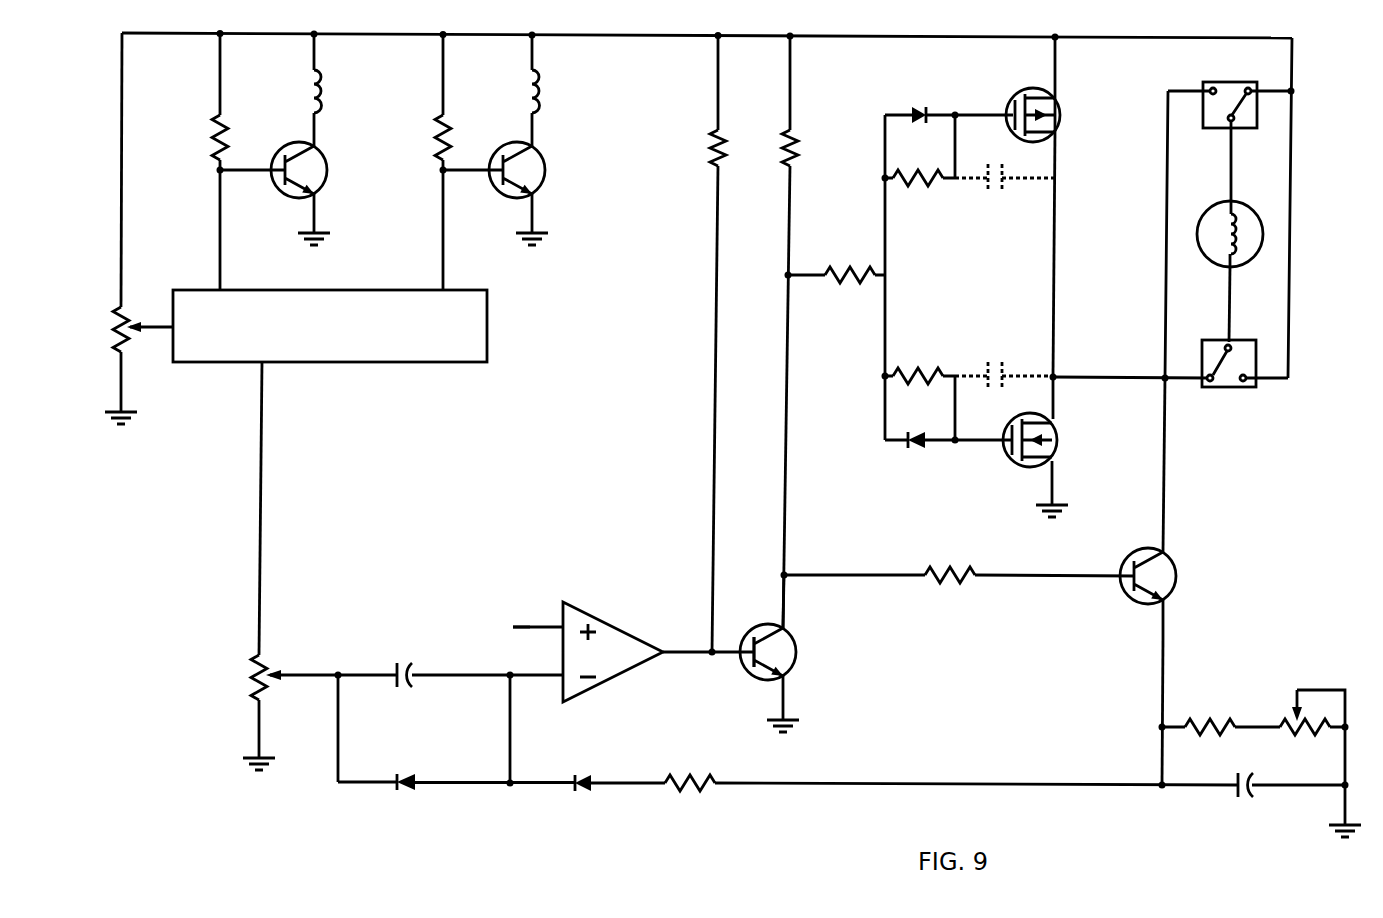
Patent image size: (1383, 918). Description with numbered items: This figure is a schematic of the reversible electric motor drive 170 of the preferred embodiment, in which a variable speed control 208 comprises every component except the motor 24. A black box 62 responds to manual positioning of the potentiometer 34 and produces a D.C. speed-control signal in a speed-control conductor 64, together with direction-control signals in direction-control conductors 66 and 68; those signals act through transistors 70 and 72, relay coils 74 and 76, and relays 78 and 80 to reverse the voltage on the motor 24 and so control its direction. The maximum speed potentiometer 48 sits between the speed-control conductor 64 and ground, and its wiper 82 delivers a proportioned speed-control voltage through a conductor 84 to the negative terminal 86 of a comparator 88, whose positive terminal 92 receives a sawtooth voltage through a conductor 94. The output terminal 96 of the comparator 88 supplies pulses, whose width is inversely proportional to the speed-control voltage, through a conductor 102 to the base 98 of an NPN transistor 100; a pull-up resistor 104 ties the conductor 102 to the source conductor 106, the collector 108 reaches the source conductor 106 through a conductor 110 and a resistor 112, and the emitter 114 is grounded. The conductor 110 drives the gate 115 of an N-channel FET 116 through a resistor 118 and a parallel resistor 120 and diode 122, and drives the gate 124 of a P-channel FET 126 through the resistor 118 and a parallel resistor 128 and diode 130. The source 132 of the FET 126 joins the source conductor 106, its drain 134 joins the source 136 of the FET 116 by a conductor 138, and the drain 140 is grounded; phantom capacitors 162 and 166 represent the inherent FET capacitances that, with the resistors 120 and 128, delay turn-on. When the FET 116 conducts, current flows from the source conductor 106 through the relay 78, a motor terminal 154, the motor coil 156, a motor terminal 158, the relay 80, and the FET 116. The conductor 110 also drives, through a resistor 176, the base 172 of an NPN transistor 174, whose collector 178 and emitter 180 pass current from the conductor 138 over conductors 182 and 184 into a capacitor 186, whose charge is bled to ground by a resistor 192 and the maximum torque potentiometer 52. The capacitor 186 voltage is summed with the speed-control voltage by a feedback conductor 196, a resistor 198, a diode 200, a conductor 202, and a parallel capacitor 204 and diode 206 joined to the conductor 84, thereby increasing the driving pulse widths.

The motor 24 is at (1167, 250).
The potentiometer 34 is at (112, 318).
The maximum speed potentiometer 48 is at (252, 672).
The maximum torque potentiometer 52 is at (1285, 718).
The black box 62 is at (349, 345).
The speed-control conductor 64 is at (262, 468).
The direction-control conductor 66 is at (222, 248).
The direction-control conductor 68 is at (445, 248).
The transistor 70 is at (327, 162).
The transistor 72 is at (546, 162).
The relay coil 74 is at (322, 88).
The relay coil 76 is at (540, 88).
The relay 78 is at (1260, 82).
The relay 80 is at (1240, 388).
The wiper 82 is at (282, 672).
The conductor 84 is at (322, 670).
The negative terminal 86 is at (563, 686).
The comparator 88 is at (626, 678).
The positive terminal 92 is at (558, 612).
The conductor 94 is at (518, 625).
The output terminal 96 is at (670, 660).
The base 98 is at (745, 662).
The NPN transistor 100 is at (797, 652).
The conductor 102 is at (686, 648).
The pull-up resistor 104 is at (714, 172).
The source conductor 106 is at (603, 38).
The collector 108 is at (788, 632).
The conductor 110 is at (788, 448).
The resistor 112 is at (797, 138).
The emitter 114 is at (788, 680).
The gate 115 is at (1008, 448).
The N-channel FET 116 is at (1059, 440).
The resistor 118 is at (850, 285).
The resistor 120 is at (935, 368).
The diode 122 is at (925, 448).
The gate 124 is at (1013, 108).
The P-channel FET 126 is at (1060, 115).
The resistor 128 is at (930, 188).
The diode 130 is at (908, 108).
The source 132 is at (1057, 95).
The drain 134 is at (1056, 138).
The source 136 is at (1053, 420).
The conductor 138 is at (1140, 376).
The drain 140 is at (1050, 462).
The motor terminal 154 is at (1242, 200).
The motor coil 156 is at (1262, 222).
The motor terminal 158 is at (1235, 280).
The phantom capacitor 162 is at (1008, 362).
The phantom capacitor 166 is at (1008, 194).
The electric motor drive 170 is at (232, 809).
The base 172 is at (1120, 578).
The NPN transistor 174 is at (1176, 560).
The resistor 176 is at (960, 580).
The collector 178 is at (1170, 548).
The emitter 180 is at (1172, 594).
The conductor 182 is at (1163, 665).
The conductor 184 is at (1185, 789).
The capacitor 186 is at (1238, 794).
The resistor 192 is at (1203, 718).
The feedback conductor 196 is at (880, 784).
The resistor 198 is at (702, 795).
The diode 200 is at (578, 795).
The conductor 202 is at (472, 676).
The capacitor 204 is at (412, 670).
The diode 206 is at (405, 795).
The variable speed control 208 is at (290, 815).